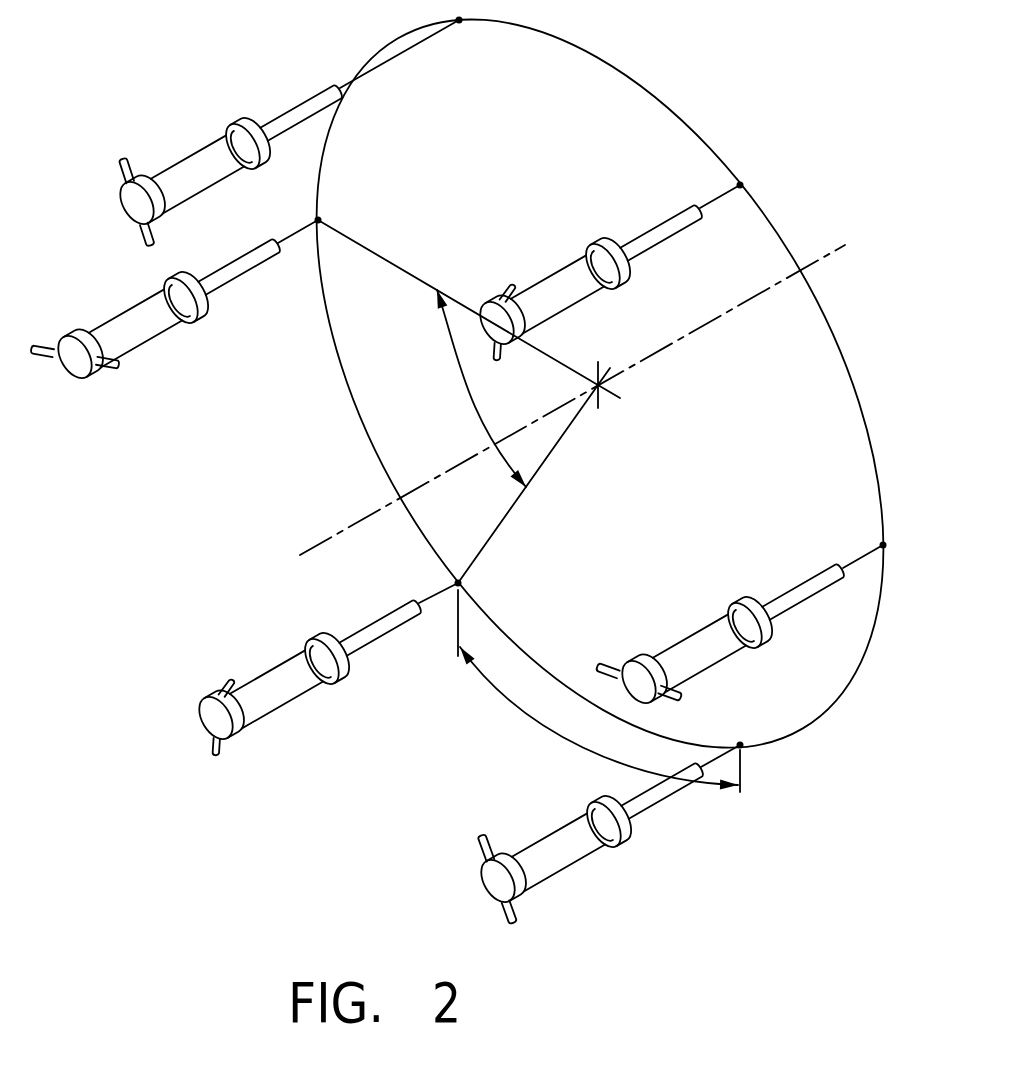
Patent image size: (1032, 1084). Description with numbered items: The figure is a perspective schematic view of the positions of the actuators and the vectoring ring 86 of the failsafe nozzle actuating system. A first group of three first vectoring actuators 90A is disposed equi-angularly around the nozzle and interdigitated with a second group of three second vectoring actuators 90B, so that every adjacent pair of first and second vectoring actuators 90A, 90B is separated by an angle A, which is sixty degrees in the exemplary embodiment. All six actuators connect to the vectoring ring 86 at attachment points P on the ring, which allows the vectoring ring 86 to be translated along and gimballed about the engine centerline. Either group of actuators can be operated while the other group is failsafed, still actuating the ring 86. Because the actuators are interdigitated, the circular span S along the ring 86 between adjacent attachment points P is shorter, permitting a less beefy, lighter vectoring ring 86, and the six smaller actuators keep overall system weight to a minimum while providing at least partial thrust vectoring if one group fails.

The vectoring ring 86 is at (586, 51).
The first vectoring actuators 90A is at (188, 167).
The second vectoring actuators 90B is at (135, 333).
The angle A is at (465, 386).
The attachment points P is at (462, 584).
The circular span S is at (552, 728).